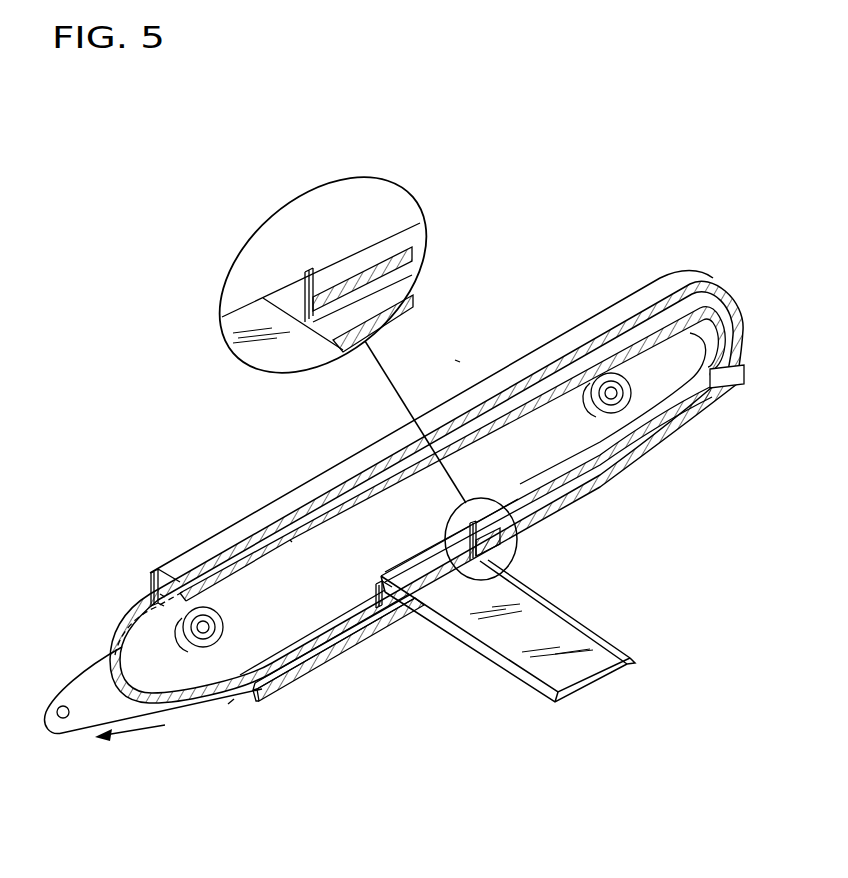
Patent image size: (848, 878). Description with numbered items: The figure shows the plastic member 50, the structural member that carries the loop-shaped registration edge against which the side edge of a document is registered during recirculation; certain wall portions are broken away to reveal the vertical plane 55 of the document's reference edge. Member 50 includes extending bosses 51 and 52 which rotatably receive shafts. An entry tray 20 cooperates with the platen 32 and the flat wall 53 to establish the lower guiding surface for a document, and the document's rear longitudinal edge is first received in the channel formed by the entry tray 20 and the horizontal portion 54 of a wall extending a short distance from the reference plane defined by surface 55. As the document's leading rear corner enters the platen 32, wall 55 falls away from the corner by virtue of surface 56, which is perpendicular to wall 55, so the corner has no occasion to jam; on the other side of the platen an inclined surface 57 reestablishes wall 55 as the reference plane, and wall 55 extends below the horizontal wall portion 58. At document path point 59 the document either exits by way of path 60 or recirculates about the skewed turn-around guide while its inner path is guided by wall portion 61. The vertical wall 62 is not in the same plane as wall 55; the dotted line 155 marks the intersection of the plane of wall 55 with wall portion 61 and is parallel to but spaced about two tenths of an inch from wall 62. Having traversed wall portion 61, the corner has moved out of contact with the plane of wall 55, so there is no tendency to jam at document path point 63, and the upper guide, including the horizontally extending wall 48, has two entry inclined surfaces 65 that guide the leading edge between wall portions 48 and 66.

The entry tray 20 is at (631, 471).
The platen 32 is at (565, 622).
The horizontally extending wall 48 is at (620, 310).
The plastic member 50 is at (458, 352).
The extending boss 51 is at (216, 636).
The extending boss 52 is at (628, 410).
The flat wall 53 is at (337, 660).
The horizontal portion of wall 54 is at (672, 398).
The vertical plane / wall 55 is at (443, 521).
The perpendicular surface 56 is at (306, 280).
The inclined surface 57 is at (388, 612).
The horizontal wall portion 58 is at (346, 634).
The document path point 59 is at (233, 702).
The exit path 60 is at (128, 733).
The wall portion 61 is at (167, 684).
The vertical wall 62 is at (102, 707).
The document path point 63 is at (143, 588).
The entry inclined surface 65 is at (183, 587).
The wall portion 66 is at (294, 541).
The dotted line 155 is at (115, 655).